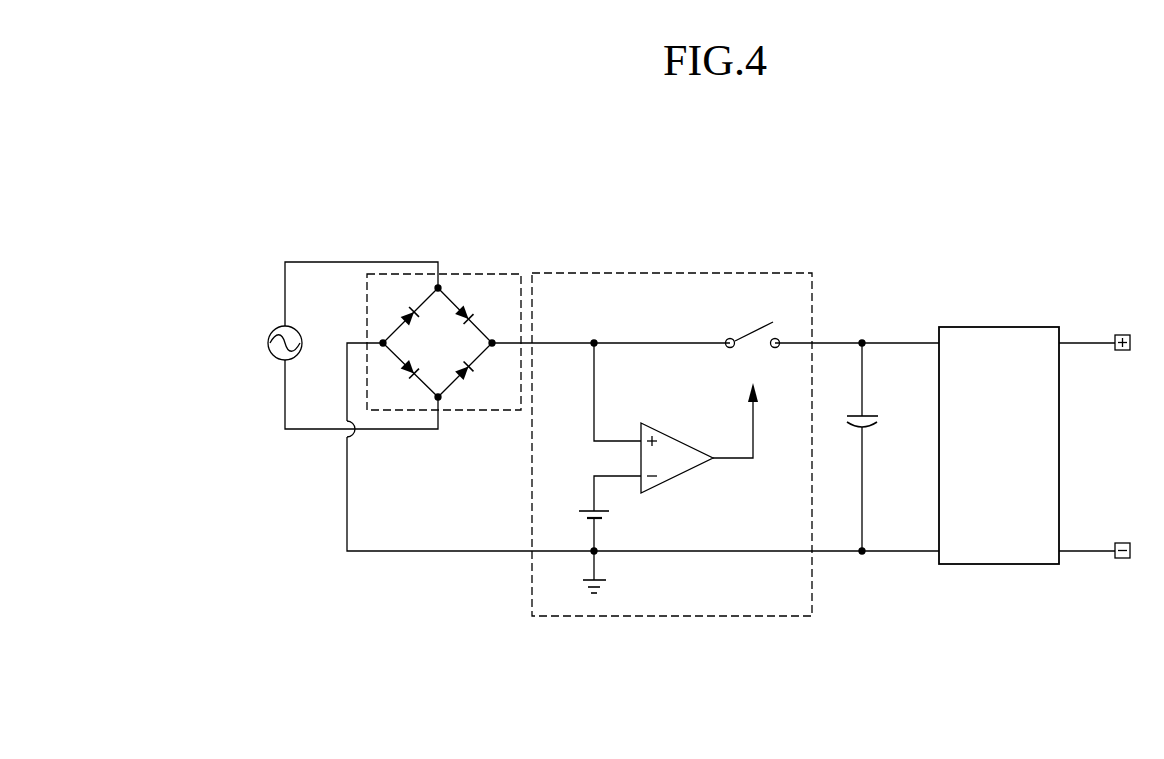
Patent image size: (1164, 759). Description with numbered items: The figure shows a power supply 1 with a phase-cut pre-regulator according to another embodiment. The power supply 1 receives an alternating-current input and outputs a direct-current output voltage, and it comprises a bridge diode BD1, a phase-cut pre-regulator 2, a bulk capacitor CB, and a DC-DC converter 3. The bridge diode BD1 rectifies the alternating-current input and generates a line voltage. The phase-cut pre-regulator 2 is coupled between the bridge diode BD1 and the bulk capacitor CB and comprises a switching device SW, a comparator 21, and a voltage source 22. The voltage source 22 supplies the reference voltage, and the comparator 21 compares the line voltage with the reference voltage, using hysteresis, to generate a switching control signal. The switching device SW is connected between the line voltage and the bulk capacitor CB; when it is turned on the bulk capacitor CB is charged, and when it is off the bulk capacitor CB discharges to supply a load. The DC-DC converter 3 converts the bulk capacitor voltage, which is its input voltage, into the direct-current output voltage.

The power supply 1 is at (934, 245).
The phase-cut pre-regulator 2 is at (672, 273).
The DC-DC converter 3 is at (998, 327).
The comparator 21 is at (673, 438).
The voltage source 22 is at (608, 513).
The bridge diode BD1 is at (472, 274).
The switching device SW is at (753, 318).
The bulk capacitor CB is at (878, 447).